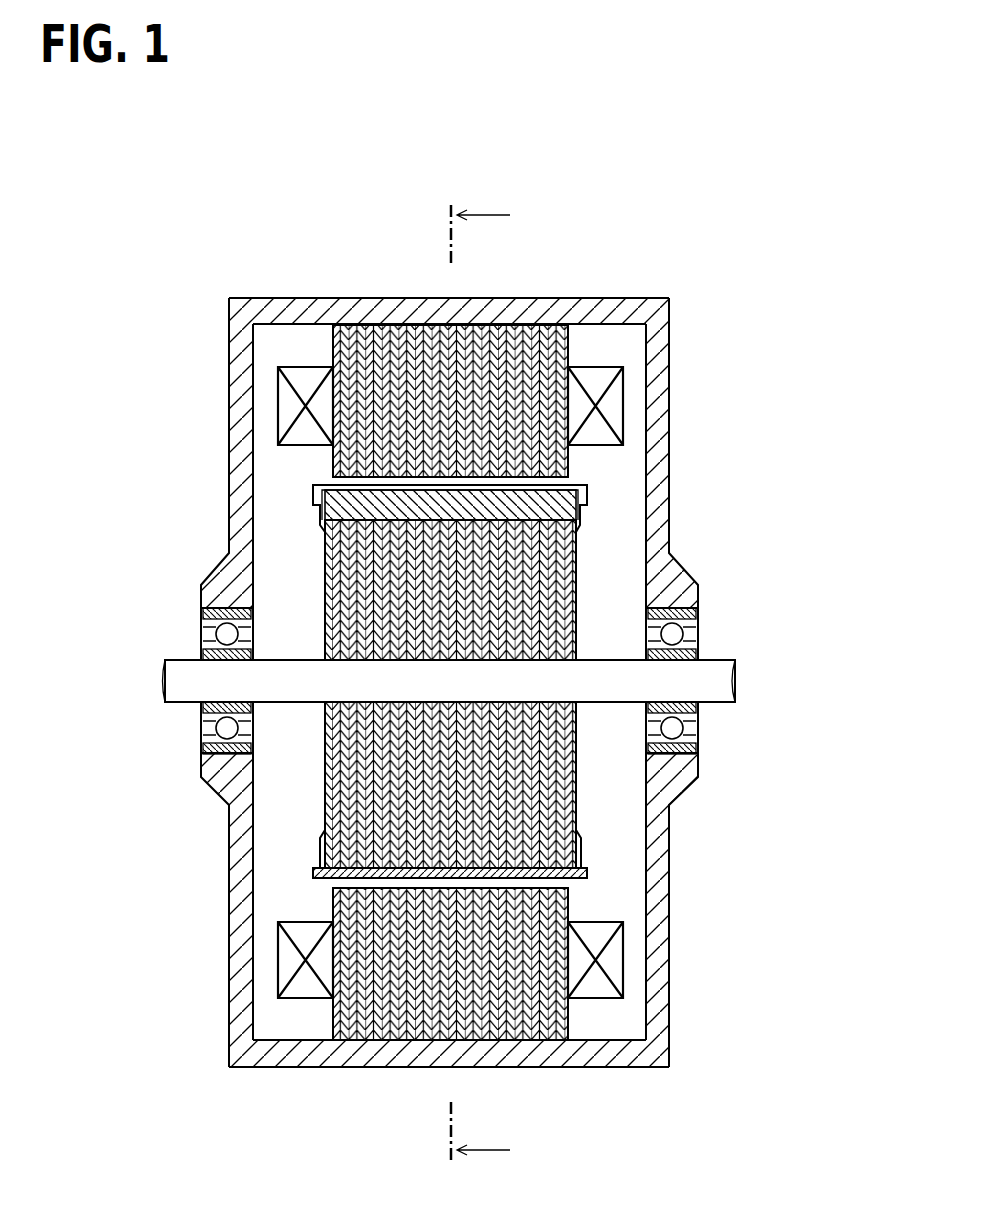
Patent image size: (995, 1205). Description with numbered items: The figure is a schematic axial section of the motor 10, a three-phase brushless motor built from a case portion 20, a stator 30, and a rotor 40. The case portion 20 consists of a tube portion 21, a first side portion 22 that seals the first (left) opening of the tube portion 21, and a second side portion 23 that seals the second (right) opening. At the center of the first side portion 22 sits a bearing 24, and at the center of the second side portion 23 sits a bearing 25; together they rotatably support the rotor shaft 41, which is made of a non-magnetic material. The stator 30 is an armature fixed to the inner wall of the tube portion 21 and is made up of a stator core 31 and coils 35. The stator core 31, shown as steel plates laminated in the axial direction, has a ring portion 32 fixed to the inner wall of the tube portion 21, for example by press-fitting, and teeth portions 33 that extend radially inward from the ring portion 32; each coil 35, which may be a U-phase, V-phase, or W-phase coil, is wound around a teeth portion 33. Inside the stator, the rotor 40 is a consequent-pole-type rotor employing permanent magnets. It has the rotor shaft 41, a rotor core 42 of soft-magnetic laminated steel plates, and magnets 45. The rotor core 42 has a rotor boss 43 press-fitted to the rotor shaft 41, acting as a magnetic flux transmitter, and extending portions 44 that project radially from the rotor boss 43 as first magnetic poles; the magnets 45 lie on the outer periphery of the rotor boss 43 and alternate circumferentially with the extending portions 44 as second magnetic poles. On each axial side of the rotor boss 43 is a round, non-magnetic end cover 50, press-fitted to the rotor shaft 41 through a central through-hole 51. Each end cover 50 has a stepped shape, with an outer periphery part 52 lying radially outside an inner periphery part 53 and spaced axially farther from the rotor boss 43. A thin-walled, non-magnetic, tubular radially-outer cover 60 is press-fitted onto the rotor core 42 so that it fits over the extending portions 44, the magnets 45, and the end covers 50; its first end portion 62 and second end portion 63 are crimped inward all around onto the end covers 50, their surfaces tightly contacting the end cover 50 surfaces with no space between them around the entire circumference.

The motor 10 is at (248, 264).
The case portion 20 is at (585, 288).
The tube portion 21 is at (507, 305).
The first side portion 22 is at (243, 442).
The second side portion 23 is at (657, 500).
The bearing 24 is at (227, 637).
The bearing 25 is at (676, 635).
The stator 30 is at (640, 401).
The stator core 31 is at (418, 222).
The ring portion 32 is at (407, 335).
The teeth portion 33 is at (350, 340).
The coil 35 is at (295, 398).
The rotor 40 is at (457, 819).
The rotor shaft 41 is at (722, 690).
The rotor core 42 is at (757, 817).
The rotor boss 43 is at (513, 770).
The extending portion 44 is at (533, 855).
The magnet 45 is at (370, 505).
The end cover 50 is at (444, 681).
The through-hole 51 is at (325, 702).
The outer periphery part 52 is at (315, 850).
The inner periphery part 53 is at (323, 777).
The radially-outer cover 60 is at (443, 872).
The first end portion 62 is at (313, 866).
The second end portion 63 is at (587, 863).